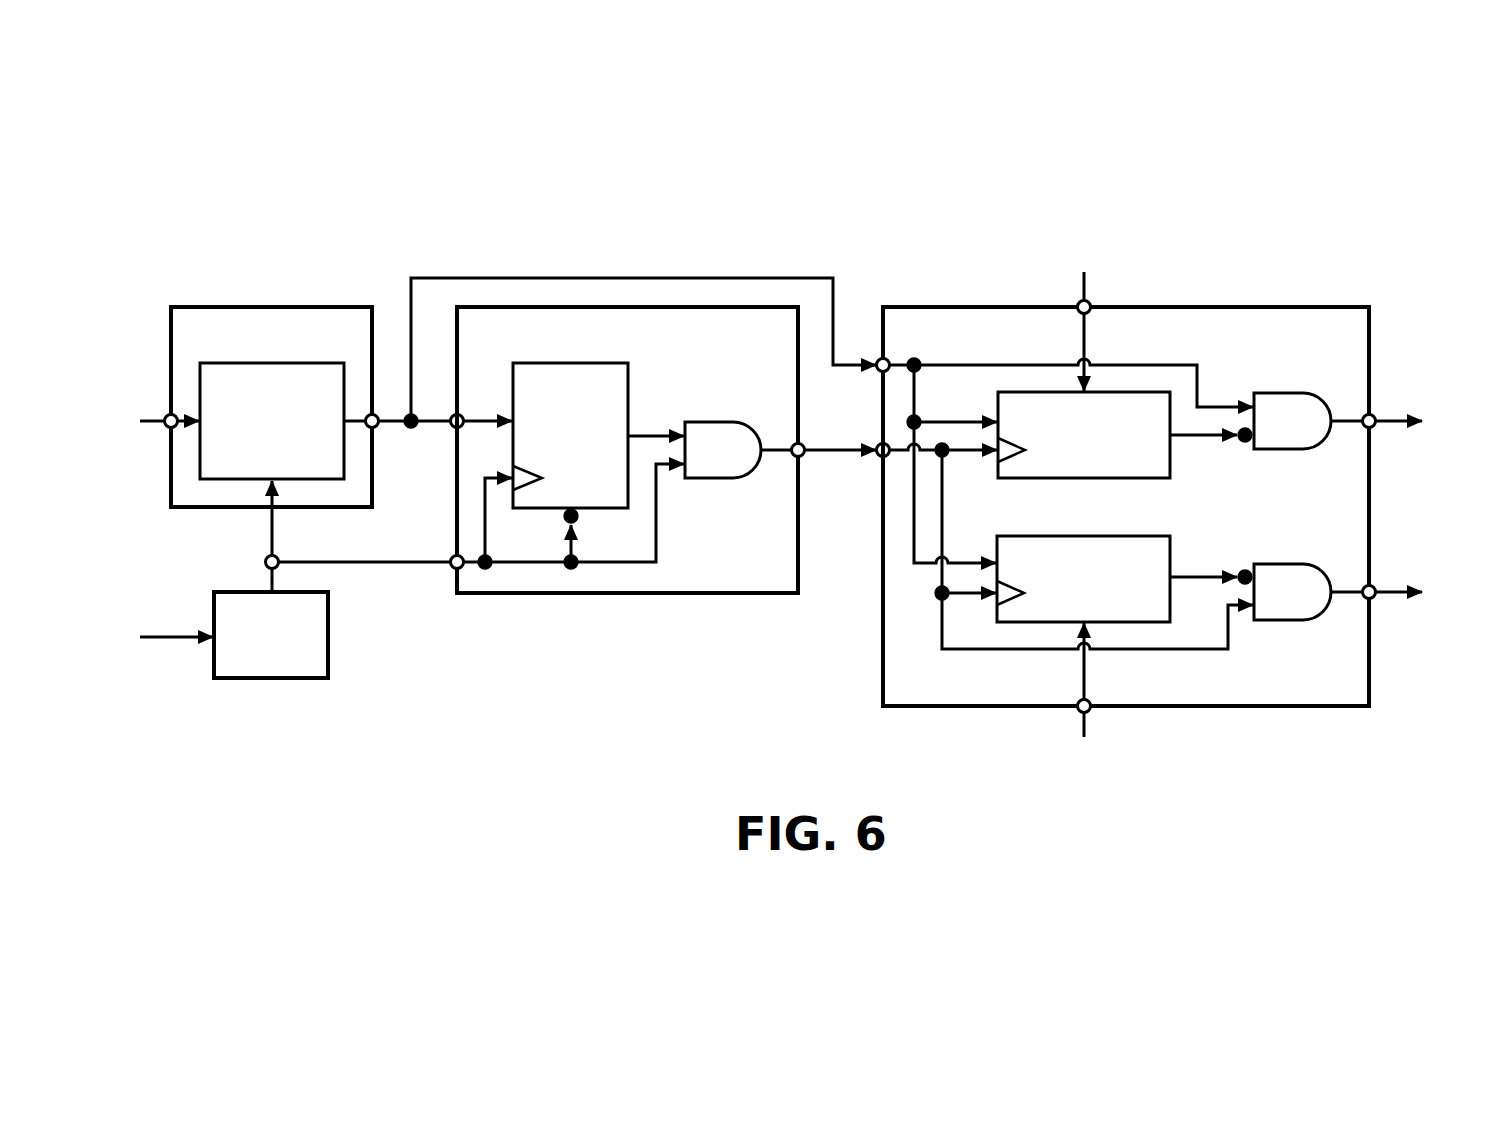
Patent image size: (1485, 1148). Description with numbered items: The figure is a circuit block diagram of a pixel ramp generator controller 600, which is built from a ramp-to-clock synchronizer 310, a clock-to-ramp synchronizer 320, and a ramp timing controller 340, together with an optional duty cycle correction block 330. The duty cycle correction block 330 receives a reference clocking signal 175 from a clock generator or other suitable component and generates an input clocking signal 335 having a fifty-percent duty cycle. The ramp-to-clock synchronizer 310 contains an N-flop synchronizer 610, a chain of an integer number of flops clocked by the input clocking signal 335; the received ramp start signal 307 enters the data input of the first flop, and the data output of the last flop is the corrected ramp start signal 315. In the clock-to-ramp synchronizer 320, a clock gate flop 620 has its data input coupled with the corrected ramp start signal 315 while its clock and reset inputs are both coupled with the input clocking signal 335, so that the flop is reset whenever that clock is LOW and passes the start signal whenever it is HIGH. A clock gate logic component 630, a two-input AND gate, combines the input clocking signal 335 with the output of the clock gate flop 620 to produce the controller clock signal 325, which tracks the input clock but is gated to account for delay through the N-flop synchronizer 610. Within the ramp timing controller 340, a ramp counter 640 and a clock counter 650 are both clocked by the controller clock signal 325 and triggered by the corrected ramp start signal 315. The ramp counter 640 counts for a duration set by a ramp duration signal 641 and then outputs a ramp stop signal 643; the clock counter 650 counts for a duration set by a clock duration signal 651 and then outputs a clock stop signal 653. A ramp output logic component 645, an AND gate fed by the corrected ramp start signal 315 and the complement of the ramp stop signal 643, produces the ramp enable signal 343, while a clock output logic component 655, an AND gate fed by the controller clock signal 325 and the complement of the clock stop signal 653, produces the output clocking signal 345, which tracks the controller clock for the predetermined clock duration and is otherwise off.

The pixel ramp generator controller 600 is at (1222, 200).
The ramp-to-clock synchronizer 310 is at (271, 407).
The N-flop synchronizer 610 is at (272, 421).
The received ramp start signal 307 is at (148, 423).
The corrected ramp start signal 315 is at (610, 365).
The clock-to-ramp synchronizer 320 is at (627, 450).
The clock gate flop 620 is at (570, 443).
The clock gate logic component 630 is at (694, 450).
The input clocking signal 335 is at (475, 528).
The duty cycle correction block 330 is at (271, 635).
The reference clocking signal 175 is at (155, 636).
The controller clock signal 325 is at (879, 465).
The ramp timing controller 340 is at (1126, 506).
The ramp counter 640 is at (1084, 435).
The clock counter 650 is at (1083, 579).
The ramp duration signal 641 is at (1087, 316).
The clock duration signal 651 is at (1087, 700).
The ramp stop signal 643 is at (1211, 450).
The clock stop signal 653 is at (1211, 565).
The ramp output logic component 645 is at (1292, 421).
The clock output logic component 655 is at (1292, 592).
The ramp enable signal 343 is at (1401, 423).
The output clocking signal 345 is at (1401, 593).